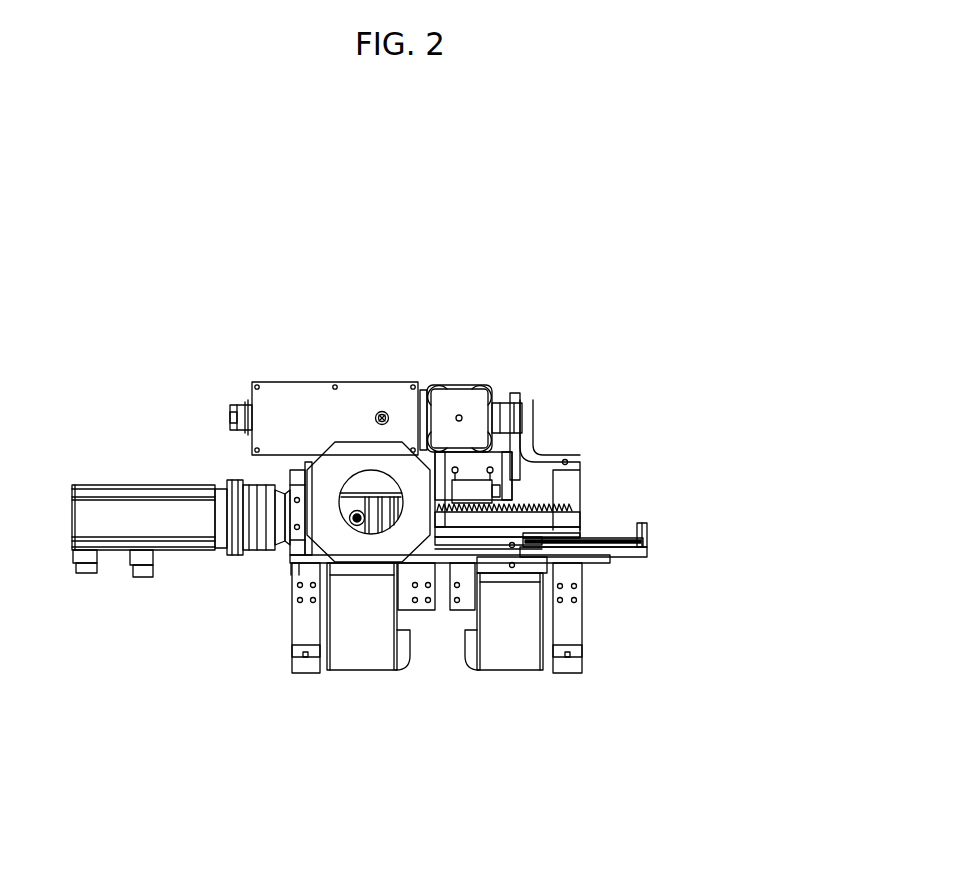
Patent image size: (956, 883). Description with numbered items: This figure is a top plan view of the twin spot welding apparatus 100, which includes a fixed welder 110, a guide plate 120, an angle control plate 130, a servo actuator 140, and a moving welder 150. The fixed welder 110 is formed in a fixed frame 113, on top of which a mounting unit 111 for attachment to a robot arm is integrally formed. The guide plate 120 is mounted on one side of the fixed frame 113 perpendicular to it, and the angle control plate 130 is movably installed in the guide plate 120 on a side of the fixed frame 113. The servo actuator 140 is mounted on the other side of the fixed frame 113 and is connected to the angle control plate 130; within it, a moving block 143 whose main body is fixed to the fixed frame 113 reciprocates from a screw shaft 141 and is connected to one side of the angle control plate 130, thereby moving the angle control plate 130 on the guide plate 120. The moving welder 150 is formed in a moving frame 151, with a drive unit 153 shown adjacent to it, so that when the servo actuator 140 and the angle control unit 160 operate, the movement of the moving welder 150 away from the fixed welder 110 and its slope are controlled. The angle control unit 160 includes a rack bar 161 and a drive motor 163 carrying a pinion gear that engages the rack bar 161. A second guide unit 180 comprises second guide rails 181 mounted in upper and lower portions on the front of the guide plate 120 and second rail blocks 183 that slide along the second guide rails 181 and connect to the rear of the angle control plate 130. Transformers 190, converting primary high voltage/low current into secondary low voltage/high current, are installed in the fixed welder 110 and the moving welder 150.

The twin spot welding apparatus 100 is at (395, 211).
The fixed welder 110 is at (232, 393).
The mounting unit 111 is at (317, 540).
The fixed frame 113 is at (363, 486).
The guide plate 120 is at (623, 557).
The angle control plate 130 is at (535, 535).
The servo actuator 140 is at (188, 538).
The screw shaft 141 is at (345, 505).
The moving block 143 is at (377, 517).
The moving welder 150 is at (527, 380).
The moving frame 151 is at (492, 462).
The drive motor 153 is at (458, 398).
The angle control unit 160 is at (540, 498).
The rack bar 161 is at (545, 527).
The drive motor 163 is at (478, 497).
The second guide unit 180 is at (688, 462).
The second guide rails 181 is at (610, 537).
The second rail blocks 183 is at (548, 536).
The transformers 190 is at (490, 640).